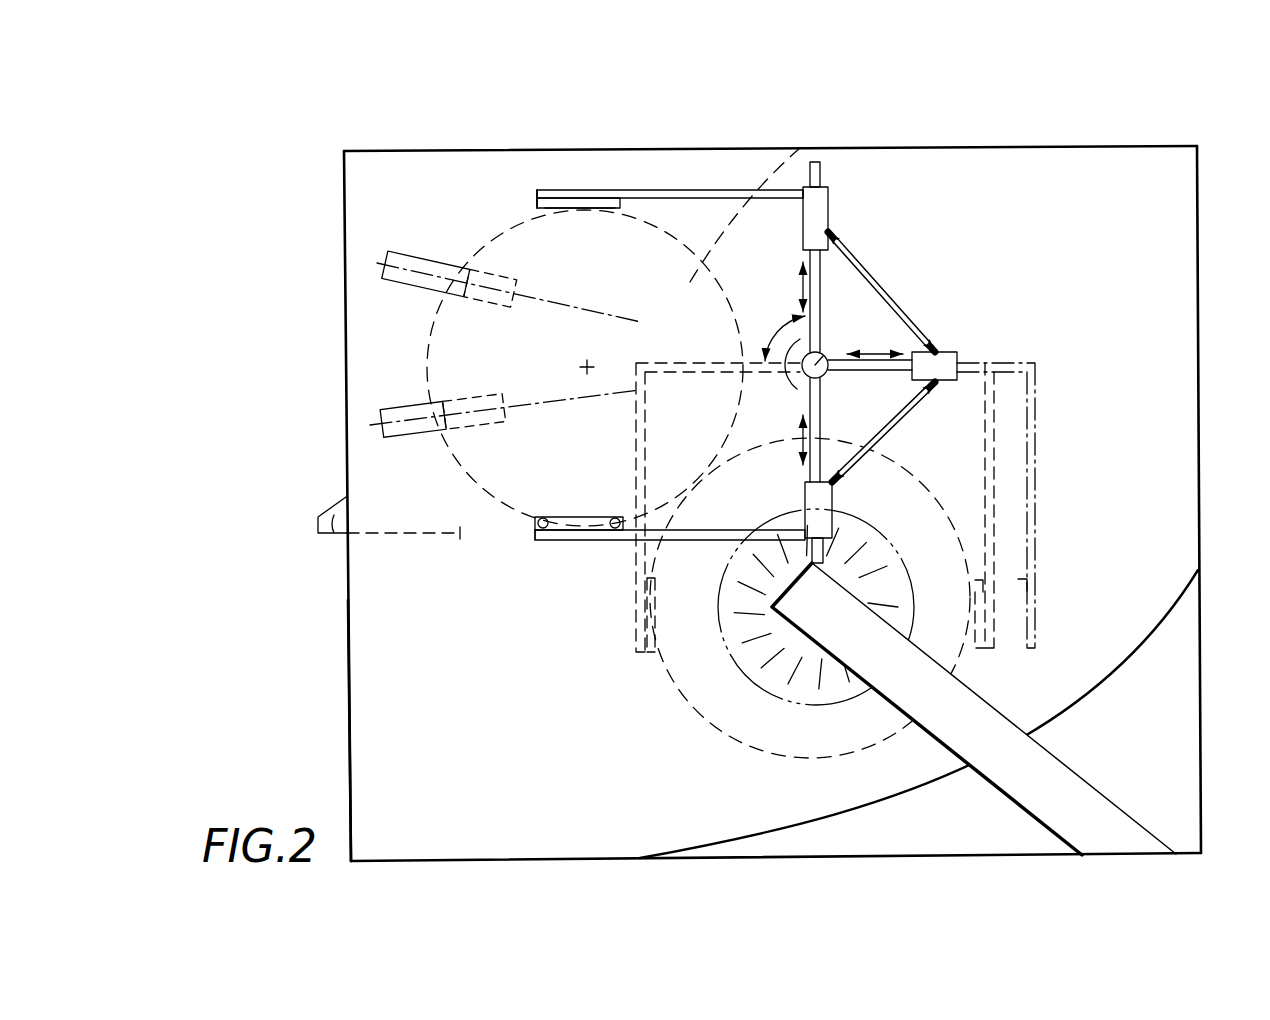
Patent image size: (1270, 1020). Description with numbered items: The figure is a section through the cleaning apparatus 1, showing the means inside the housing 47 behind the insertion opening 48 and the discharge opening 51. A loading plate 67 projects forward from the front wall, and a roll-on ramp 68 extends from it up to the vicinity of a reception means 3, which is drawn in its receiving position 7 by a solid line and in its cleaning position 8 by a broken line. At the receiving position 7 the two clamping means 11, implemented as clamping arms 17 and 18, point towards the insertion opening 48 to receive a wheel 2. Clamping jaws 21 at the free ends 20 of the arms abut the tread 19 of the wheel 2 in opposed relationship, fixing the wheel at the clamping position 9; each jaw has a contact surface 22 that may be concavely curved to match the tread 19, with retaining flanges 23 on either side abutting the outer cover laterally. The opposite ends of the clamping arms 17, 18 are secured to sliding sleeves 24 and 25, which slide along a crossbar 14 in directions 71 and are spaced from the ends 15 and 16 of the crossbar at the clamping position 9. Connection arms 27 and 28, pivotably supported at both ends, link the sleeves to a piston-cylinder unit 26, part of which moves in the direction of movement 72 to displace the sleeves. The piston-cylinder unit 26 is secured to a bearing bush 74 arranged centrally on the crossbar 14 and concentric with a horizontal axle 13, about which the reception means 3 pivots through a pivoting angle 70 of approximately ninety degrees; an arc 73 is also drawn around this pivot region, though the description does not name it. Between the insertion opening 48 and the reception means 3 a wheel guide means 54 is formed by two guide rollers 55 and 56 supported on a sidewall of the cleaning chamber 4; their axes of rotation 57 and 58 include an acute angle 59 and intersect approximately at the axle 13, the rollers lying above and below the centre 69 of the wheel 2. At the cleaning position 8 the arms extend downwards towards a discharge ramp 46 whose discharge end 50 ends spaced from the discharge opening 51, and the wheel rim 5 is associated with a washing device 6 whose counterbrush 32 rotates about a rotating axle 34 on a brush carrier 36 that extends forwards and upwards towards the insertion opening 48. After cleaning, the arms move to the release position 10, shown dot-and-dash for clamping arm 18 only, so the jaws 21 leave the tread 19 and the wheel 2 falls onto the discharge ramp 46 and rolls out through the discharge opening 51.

The cleaning apparatus 1 is at (770, 135).
The wheel 2 is at (800, 147).
The reception means 3 is at (998, 366).
The cleaning chamber 4 is at (1037, 213).
The wheel rim 5 is at (668, 652).
The washing device 6 is at (720, 668).
The receiving position 7 is at (868, 250).
The cleaning position 8 is at (1003, 438).
The clamping position 9 is at (591, 188).
The release position 10 is at (1038, 513).
The clamping means 11 is at (850, 376).
The horizontal axle 13 is at (824, 322).
The crossbar 14 is at (830, 430).
The end of crossbar 15 is at (826, 170).
The end of crossbar 16 is at (836, 555).
The clamping arm 17 is at (686, 190).
The clamping arm 18 is at (603, 543).
The tread 19 is at (455, 470).
The free ends 20 is at (534, 195).
The clamping jaws 21 is at (602, 200).
The contact surface 22 is at (580, 212).
The retaining flanges 23 is at (614, 515).
The sliding sleeve 24 is at (819, 210).
The sliding sleeve 25 is at (806, 505).
The piston-cylinder unit 26 is at (937, 331).
The connection arm 27 is at (895, 303).
The connection arm 28 is at (925, 415).
The counterbrush 32 is at (905, 792).
The rotating axle 34 is at (825, 606).
The brush carrier 36 is at (990, 742).
The discharge ramp 46 is at (1090, 678).
The housing 47 is at (1115, 147).
The insertion opening 48 is at (342, 338).
The discharge end 50 is at (655, 851).
The discharge opening 51 is at (345, 712).
The wheel guide means 54 is at (425, 248).
The guide roller 55 is at (440, 268).
The guide roller 56 is at (405, 410).
The axis of rotation 57 is at (523, 290).
The axis of rotation 58 is at (603, 400).
The acute angle 59 is at (533, 305).
The loading plate 67 is at (322, 540).
The roll-on ramp 68 is at (410, 540).
The centre 69 is at (592, 366).
The pivoting angle 70 is at (765, 356).
The directions 71 is at (801, 288).
The direction of movement 72 is at (872, 354).
The pivot bearing 73 is at (795, 383).
The bearing bush 74 is at (825, 377).